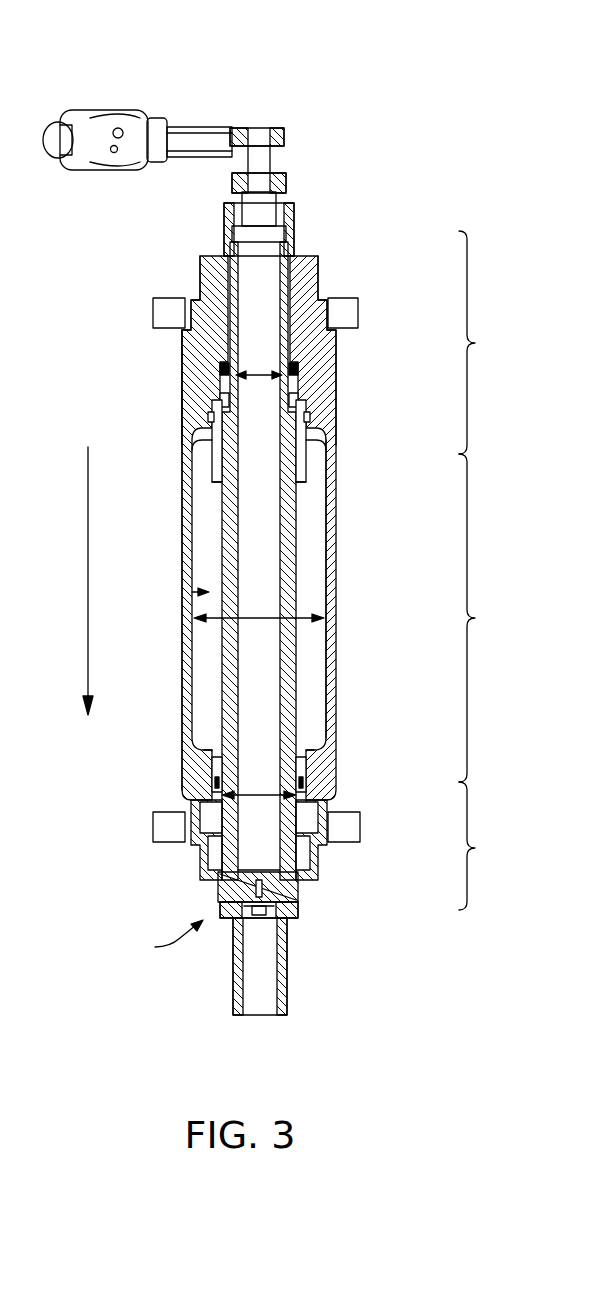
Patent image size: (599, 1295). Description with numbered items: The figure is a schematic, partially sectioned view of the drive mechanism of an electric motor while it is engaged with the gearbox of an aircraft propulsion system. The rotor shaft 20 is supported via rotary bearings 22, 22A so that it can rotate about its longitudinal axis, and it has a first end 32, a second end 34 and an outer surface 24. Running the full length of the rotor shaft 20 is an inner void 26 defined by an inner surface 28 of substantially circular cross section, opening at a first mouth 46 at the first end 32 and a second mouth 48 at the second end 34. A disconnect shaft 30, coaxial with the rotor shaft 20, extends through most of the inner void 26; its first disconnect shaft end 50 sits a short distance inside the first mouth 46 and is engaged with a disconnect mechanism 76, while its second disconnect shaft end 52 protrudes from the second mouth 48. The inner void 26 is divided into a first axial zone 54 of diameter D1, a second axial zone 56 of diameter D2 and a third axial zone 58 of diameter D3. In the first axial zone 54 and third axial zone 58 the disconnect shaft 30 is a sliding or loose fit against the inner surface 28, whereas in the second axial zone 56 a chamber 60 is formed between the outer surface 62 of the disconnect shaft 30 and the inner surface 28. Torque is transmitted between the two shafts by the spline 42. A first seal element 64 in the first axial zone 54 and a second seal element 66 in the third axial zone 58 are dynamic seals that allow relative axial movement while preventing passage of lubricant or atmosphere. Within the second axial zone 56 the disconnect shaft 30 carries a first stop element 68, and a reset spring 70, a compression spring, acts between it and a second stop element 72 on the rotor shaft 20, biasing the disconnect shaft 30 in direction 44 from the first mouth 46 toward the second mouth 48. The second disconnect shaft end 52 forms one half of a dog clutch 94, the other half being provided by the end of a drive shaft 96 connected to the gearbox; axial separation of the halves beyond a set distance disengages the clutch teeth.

The rotor shaft 20 is at (352, 592).
The rotary bearing 22 is at (170, 315).
The rotary bearing 22A is at (168, 828).
The outer surface 24 is at (336, 685).
The inner void 26 is at (192, 592).
The inner surface 28 is at (338, 546).
The disconnect shaft 30 is at (212, 532).
The first end 32 is at (292, 205).
The second end 34 is at (195, 889).
The spline 42 is at (313, 348).
The direction 44 is at (88, 583).
The first mouth 46 is at (286, 188).
The second mouth 48 is at (305, 898).
The first disconnect shaft end 50 is at (240, 233).
The second disconnect shaft end 52 is at (222, 928).
The first axial zone 54 is at (486, 342).
The second axial zone 56 is at (486, 618).
The third axial zone 58 is at (486, 846).
The chamber 60 is at (205, 707).
The outer surface 62 is at (212, 481).
The first seal element 64 is at (220, 390).
The second seal element 66 is at (310, 775).
The first stop element 68 is at (308, 483).
The reset spring 70 is at (302, 447).
The second stop element 72 is at (305, 418).
The disconnect mechanism 76 is at (226, 96).
The dog clutch 94 is at (164, 942).
The drive shaft 96 is at (290, 975).
The diameter D1 is at (280, 376).
The diameter D2 is at (257, 620).
The diameter D3 is at (215, 795).